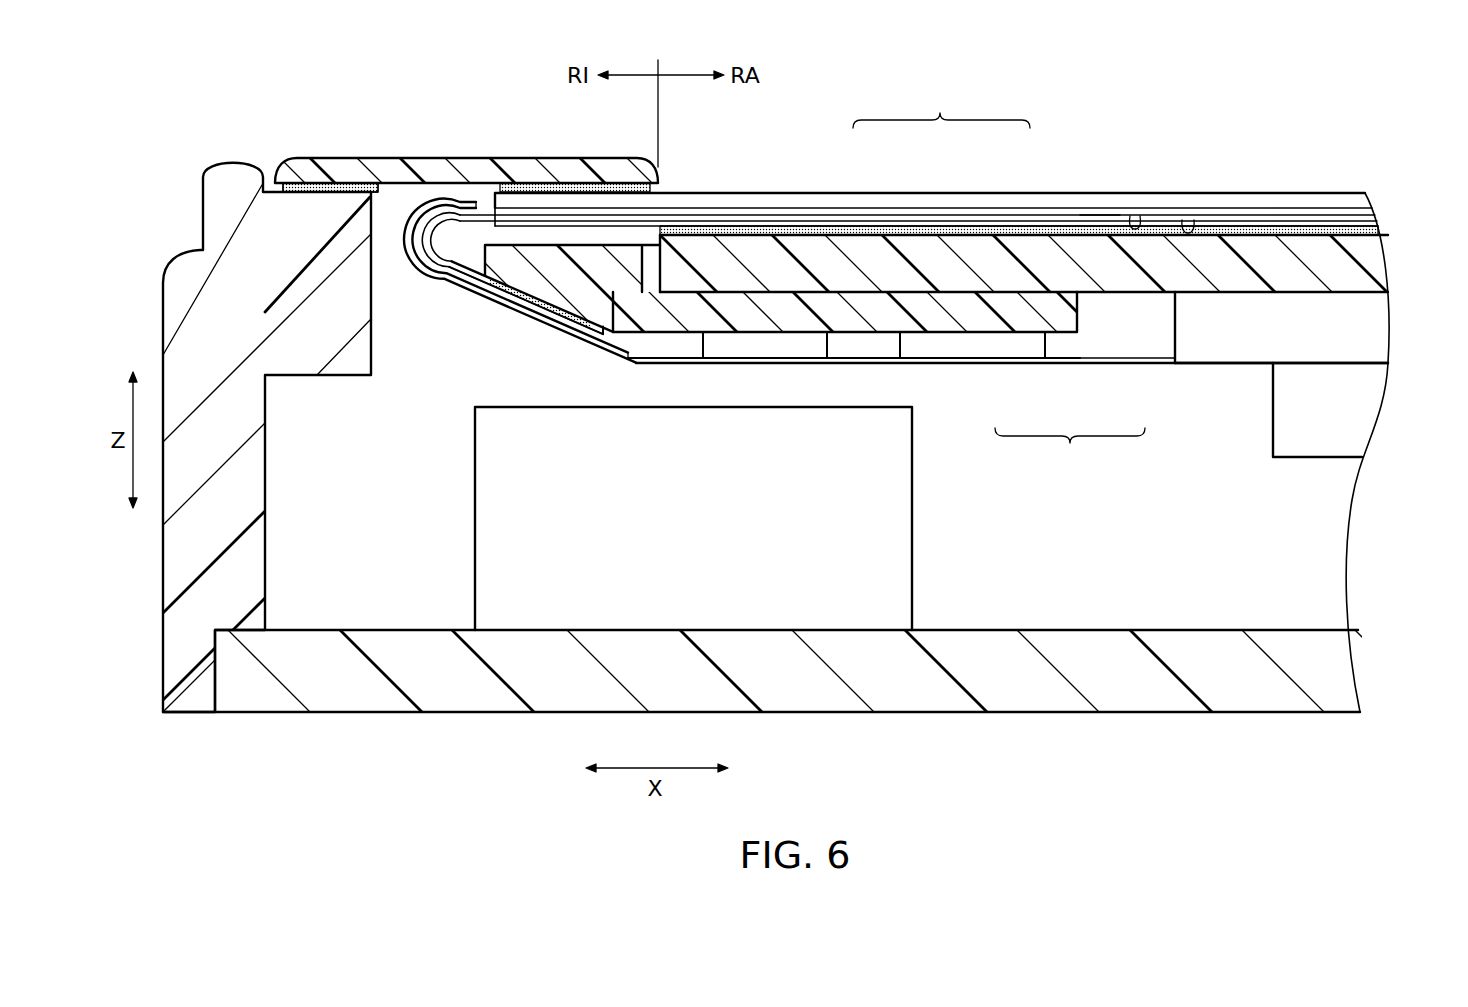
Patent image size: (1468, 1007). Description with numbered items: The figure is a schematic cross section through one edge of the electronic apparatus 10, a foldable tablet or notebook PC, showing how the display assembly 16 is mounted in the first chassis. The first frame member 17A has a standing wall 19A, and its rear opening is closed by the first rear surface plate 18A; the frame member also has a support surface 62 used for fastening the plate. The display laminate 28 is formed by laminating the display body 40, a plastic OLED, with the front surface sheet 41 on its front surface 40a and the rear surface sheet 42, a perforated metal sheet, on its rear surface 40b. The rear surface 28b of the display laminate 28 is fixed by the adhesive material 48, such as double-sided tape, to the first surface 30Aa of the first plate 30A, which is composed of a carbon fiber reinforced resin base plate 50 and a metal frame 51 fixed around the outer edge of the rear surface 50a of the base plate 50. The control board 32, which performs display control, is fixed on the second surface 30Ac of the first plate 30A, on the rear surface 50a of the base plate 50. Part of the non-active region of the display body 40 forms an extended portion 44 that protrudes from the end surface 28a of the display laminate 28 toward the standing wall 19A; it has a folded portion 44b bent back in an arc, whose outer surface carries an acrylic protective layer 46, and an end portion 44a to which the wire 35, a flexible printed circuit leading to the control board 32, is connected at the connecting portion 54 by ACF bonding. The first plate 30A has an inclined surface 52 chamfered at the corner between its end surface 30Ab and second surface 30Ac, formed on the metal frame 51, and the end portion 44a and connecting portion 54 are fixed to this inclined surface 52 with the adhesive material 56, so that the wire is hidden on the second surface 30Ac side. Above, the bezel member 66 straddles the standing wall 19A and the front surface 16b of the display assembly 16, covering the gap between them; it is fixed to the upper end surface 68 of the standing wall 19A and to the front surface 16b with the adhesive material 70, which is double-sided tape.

The electronic apparatus 10 is at (157, 48).
The display assembly 16 is at (1243, 150).
The front surface of display assembly 16b is at (707, 190).
The first frame member 17A is at (155, 300).
The first rear surface plate 18A is at (372, 697).
The standing wall 19A is at (205, 341).
The display laminate 28 is at (941, 108).
The end surface of display laminate 28a is at (478, 212).
The rear surface of display laminate 28b is at (1190, 222).
The first plate 30A is at (1070, 448).
The first surface of first plate 30Aa is at (782, 232).
The end surface of first plate 30Ab is at (454, 286).
The second surface of first plate 30Ac is at (780, 334).
The control board 32 is at (1362, 342).
The wire 35 is at (690, 363).
The display body 40 is at (938, 217).
The front surface of display body 40a is at (1100, 216).
The rear surface of display body 40b is at (1139, 219).
The front surface sheet 41 is at (873, 205).
The rear surface sheet 42 is at (1003, 220).
The extended portion 44 is at (484, 305).
The end portion of extended portion 44a is at (553, 338).
The folded portion 44b is at (418, 242).
The protective layer 46 is at (444, 206).
The adhesive material 48 is at (1280, 235).
The base plate 50 is at (1122, 282).
The rear surface of base plate 50a is at (1233, 297).
The metal frame 51 is at (1017, 320).
The inclined surface 52 is at (601, 342).
The connecting portion 54 is at (522, 325).
The adhesive material 56 is at (503, 320).
The support surface 62 is at (866, 406).
The bezel member 66 is at (527, 170).
The upper end surface of standing wall 68 is at (296, 187).
The adhesive material 70 is at (344, 190).